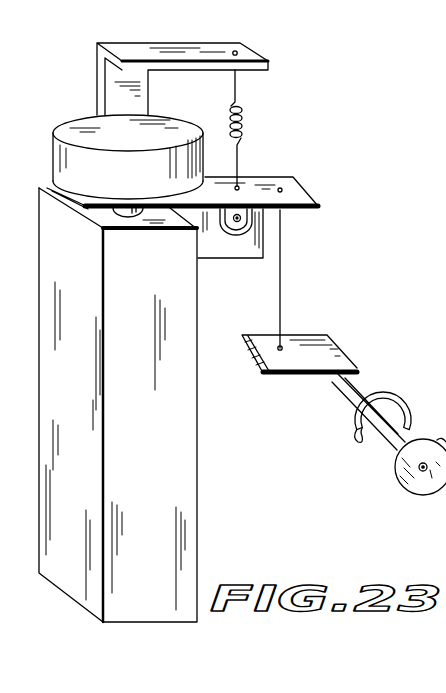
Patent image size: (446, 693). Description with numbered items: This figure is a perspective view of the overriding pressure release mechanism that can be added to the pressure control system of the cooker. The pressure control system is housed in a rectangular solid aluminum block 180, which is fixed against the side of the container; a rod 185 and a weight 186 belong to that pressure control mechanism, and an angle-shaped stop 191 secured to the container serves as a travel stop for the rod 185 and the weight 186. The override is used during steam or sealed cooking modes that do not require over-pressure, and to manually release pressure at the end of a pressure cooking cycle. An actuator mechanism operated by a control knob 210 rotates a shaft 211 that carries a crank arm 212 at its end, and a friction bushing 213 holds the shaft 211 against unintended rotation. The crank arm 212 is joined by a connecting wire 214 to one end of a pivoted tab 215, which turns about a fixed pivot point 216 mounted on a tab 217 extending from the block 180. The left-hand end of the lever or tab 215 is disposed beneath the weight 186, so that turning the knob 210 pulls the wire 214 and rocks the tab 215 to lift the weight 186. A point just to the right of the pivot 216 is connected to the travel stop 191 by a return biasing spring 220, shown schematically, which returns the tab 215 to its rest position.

The block 180 is at (164, 438).
The rod 185 is at (102, 229).
The weight 186 is at (148, 184).
The angle-shaped stop 191 is at (185, 50).
The control knob 210 is at (408, 488).
The shaft 211 is at (362, 385).
The crank arm 212 is at (298, 335).
The friction bushing 213 is at (352, 411).
The connecting wire 214 is at (283, 258).
The pivoted tab 215 is at (253, 178).
The pivot point 216 is at (222, 224).
The tab 217 is at (228, 258).
The return biasing spring 220 is at (244, 117).